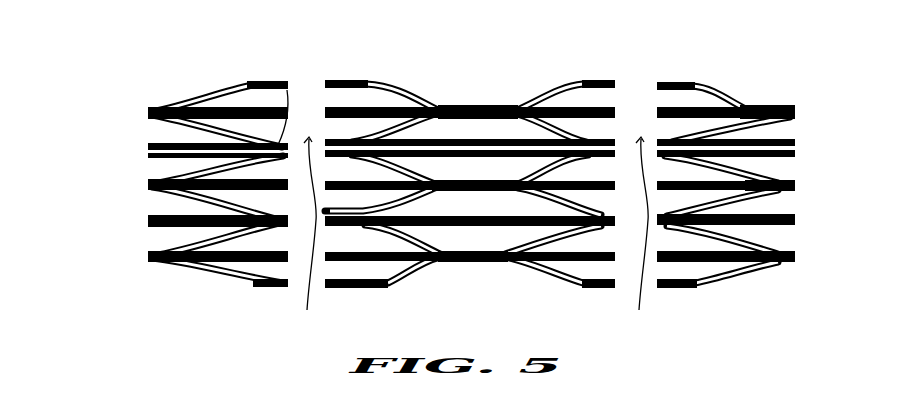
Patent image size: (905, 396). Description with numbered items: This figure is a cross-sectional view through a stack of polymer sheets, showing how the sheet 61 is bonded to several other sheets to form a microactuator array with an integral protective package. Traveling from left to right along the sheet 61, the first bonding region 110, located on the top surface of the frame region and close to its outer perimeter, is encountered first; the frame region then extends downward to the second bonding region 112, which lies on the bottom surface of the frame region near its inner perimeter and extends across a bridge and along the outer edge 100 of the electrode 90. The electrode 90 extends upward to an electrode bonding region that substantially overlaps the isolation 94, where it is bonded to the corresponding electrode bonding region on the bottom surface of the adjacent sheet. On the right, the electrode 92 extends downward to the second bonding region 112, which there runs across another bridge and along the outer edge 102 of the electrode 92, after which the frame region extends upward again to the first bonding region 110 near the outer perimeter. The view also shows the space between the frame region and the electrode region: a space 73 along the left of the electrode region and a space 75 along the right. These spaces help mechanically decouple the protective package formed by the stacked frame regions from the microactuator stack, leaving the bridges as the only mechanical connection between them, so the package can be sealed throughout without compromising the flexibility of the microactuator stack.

The first bonding region 110 is at (148, 114).
The sheet 61 is at (232, 95).
The second bonding region 112 is at (283, 82).
The outer edge of electrode 100 is at (343, 140).
The electrode 90 is at (420, 107).
The isolation 94 is at (490, 105).
The electrode 92 is at (549, 105).
The outer edge of electrode 102 is at (607, 138).
The space 73 is at (311, 236).
The space 75 is at (631, 237).